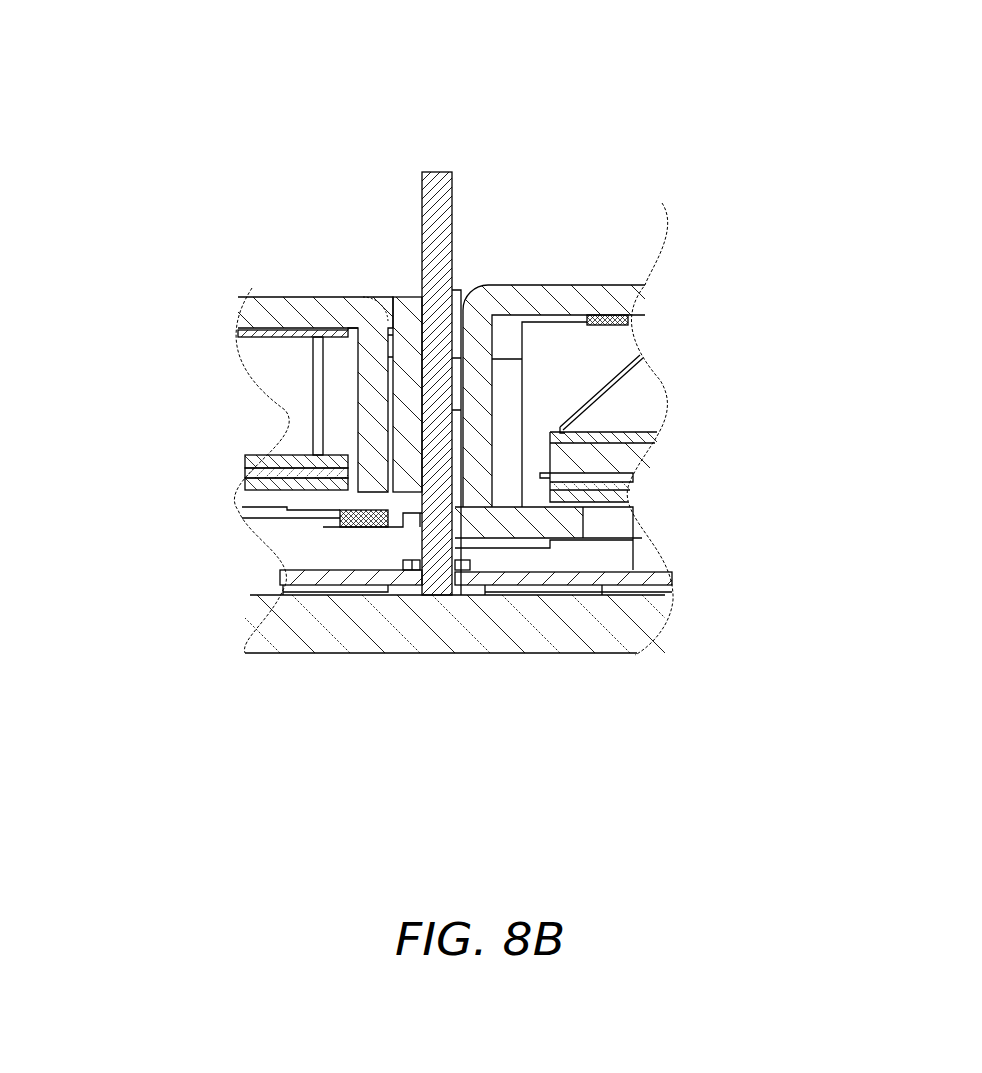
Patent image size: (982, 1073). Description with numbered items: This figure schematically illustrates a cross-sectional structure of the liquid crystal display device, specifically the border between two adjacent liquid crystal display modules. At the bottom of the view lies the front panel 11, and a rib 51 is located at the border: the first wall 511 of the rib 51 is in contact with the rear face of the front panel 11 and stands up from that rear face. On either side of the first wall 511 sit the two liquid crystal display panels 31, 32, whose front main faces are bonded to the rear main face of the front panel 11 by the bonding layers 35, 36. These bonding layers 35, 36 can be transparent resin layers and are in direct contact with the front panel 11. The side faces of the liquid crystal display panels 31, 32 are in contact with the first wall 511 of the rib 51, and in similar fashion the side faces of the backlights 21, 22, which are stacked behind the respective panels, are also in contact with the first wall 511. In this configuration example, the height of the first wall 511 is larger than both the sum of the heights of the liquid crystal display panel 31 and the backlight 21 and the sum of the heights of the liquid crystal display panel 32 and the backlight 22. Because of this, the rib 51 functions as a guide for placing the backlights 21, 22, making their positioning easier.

The rib 51 is at (440, 168).
The first wall 511 is at (418, 250).
The backlight 22 is at (397, 297).
The backlight 21 is at (457, 293).
The liquid crystal display panel 32 is at (262, 518).
The liquid crystal display panel 31 is at (612, 540).
The bonding layer 36 is at (307, 568).
The bonding layer 35 is at (622, 568).
The front panel 11 is at (488, 653).